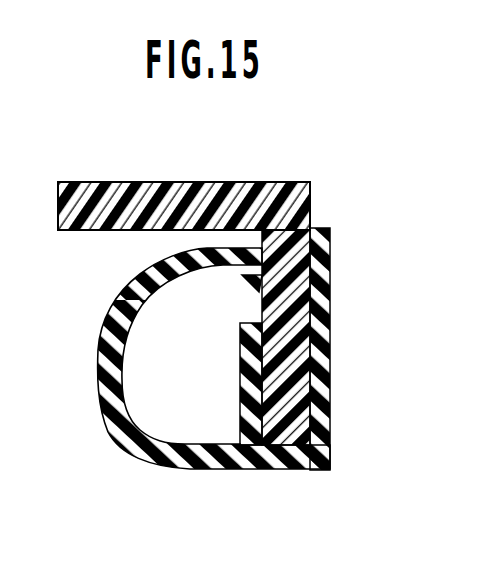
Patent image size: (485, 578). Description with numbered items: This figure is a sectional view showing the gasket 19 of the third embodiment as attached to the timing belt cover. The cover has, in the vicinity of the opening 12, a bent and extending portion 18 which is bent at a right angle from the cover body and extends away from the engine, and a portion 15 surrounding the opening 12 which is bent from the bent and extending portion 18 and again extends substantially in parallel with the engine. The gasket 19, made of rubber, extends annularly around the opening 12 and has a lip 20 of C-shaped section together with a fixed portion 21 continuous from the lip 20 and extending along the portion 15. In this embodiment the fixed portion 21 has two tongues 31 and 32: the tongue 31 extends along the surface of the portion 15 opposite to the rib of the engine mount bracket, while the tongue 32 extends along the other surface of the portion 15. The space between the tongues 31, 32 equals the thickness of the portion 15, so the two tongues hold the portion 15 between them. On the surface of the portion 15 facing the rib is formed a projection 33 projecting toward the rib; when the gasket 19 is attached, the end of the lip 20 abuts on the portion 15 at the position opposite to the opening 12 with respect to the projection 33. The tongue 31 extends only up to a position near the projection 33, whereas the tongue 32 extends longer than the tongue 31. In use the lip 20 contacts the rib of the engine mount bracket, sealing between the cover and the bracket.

The opening 12 is at (214, 389).
The portion of the timing belt cover surrounding the opening 15 is at (292, 228).
The bent and extending portion 18 is at (164, 200).
The gasket 19 is at (188, 389).
The lip 20 is at (188, 389).
The fixed portion 21 is at (280, 447).
The tongue 31 is at (244, 392).
The tongue 32 is at (320, 356).
The projection 33 is at (246, 283).